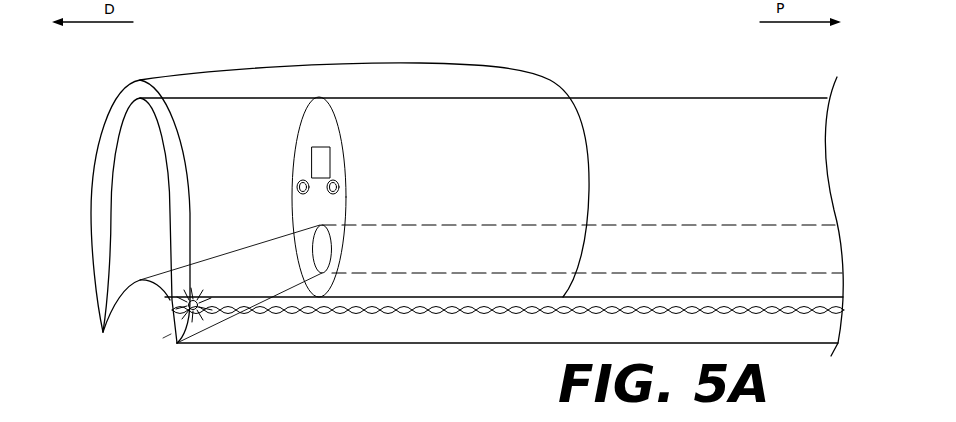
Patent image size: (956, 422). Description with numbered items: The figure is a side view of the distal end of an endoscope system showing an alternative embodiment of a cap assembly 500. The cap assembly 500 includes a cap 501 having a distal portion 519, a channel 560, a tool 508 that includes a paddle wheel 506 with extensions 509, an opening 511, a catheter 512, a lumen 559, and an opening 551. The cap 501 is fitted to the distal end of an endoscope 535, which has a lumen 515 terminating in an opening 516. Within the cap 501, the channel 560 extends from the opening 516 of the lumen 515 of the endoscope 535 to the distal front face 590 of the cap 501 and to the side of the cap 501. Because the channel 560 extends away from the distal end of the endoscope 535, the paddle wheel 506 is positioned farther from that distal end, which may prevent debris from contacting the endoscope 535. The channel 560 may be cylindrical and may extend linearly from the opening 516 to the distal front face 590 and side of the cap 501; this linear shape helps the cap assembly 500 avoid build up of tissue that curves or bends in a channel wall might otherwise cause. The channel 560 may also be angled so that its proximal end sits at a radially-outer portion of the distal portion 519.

The cap assembly 500 is at (178, 57).
The cap 501 is at (478, 77).
The opening 551 is at (137, 137).
The distal portion 519 is at (103, 280).
The distal front face 590 is at (88, 307).
The channel 560 is at (140, 300).
The opening 511 is at (163, 335).
The paddle wheel 506 is at (175, 343).
The extensions 509 is at (200, 310).
The endoscope 535 is at (700, 110).
The lumen 515 is at (690, 226).
The opening 516 is at (331, 249).
The tool 508 is at (350, 317).
The lumen 559 is at (512, 317).
The catheter 512 is at (810, 343).